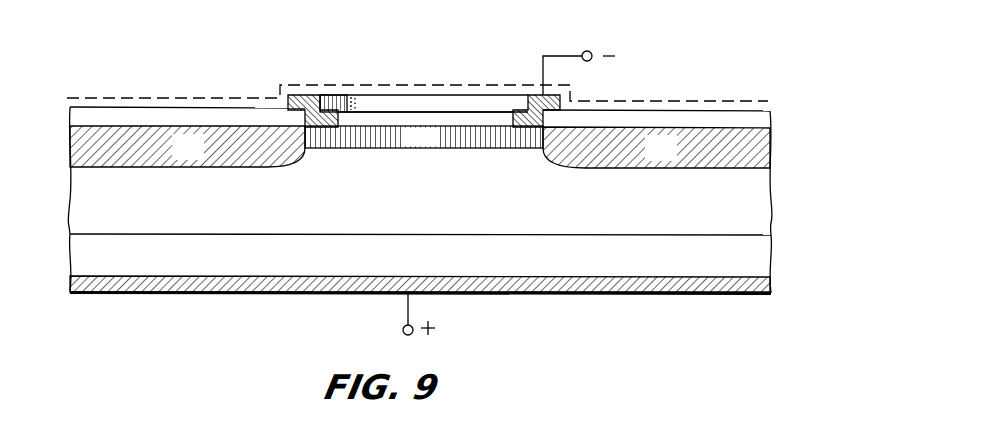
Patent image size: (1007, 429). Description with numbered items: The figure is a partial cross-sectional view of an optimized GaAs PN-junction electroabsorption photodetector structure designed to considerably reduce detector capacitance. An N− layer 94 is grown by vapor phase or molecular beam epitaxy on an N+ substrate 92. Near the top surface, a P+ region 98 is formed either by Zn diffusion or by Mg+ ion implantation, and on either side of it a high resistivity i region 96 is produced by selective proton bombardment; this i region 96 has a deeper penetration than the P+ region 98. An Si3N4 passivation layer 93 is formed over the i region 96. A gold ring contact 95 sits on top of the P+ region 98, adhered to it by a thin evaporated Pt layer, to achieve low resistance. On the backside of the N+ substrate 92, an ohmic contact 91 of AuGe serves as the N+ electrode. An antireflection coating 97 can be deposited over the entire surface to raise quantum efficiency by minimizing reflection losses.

The ohmic contact 91 is at (337, 294).
The N+ substrate 92 is at (459, 268).
The passivation layer 93 is at (173, 107).
The N− layer 94 is at (485, 204).
The gold ring contact 95 is at (460, 95).
The high resistivity i region 96 is at (201, 158).
The antireflection coating 97 is at (645, 101).
The P+ region 98 is at (330, 150).